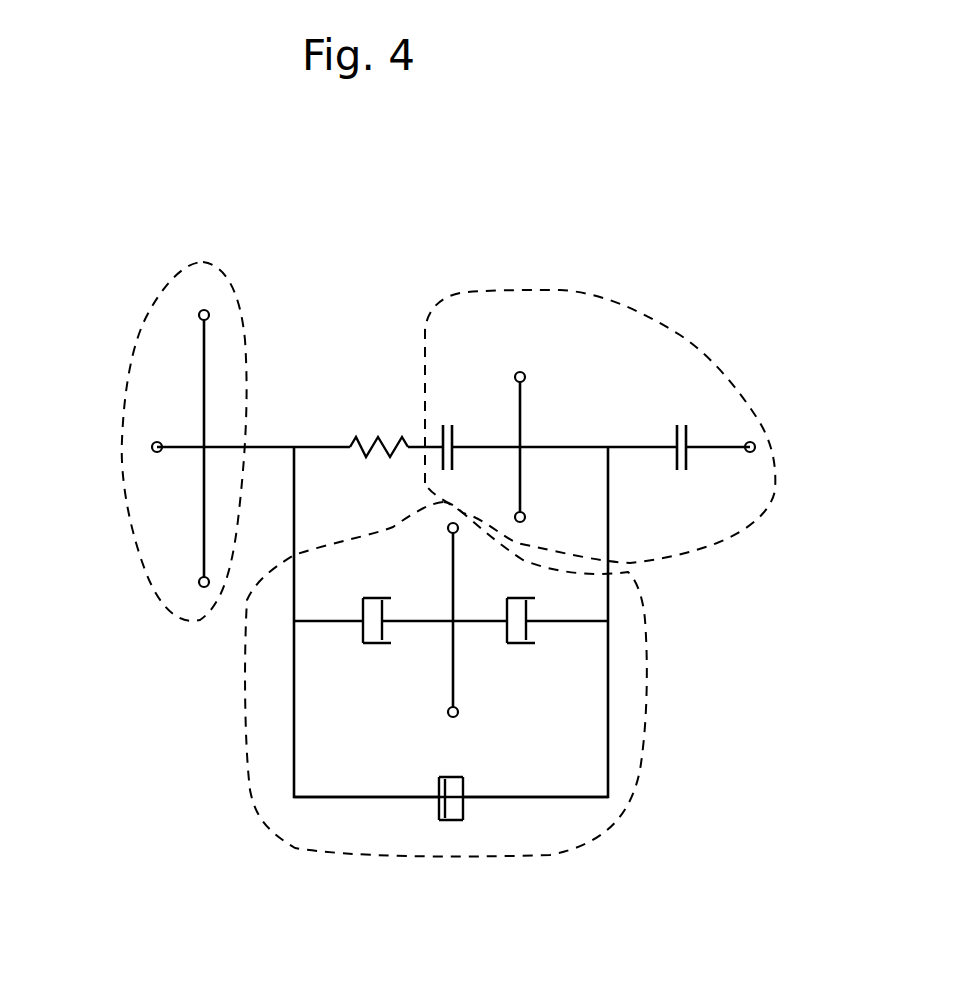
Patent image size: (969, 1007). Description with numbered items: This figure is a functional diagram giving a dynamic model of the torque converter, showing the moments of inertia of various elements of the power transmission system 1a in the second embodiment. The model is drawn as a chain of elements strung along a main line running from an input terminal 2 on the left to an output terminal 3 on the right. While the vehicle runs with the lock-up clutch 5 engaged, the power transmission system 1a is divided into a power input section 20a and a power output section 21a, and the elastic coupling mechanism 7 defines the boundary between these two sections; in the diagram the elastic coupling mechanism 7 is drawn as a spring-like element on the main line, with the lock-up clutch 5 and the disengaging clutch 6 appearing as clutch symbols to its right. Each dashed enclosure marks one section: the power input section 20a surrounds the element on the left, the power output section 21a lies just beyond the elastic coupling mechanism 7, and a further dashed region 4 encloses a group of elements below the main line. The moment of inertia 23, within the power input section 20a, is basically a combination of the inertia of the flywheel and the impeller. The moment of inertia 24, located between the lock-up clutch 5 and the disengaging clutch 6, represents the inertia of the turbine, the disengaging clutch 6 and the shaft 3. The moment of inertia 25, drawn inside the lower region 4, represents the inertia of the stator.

The power transmission system 1a is at (598, 318).
The input terminal 2 is at (152, 446).
The shaft 3 is at (755, 445).
The crystal filter block 4 is at (645, 683).
The lock-up clutch 5 is at (448, 405).
The disengaging clutch 6 is at (686, 384).
The elastic coupling mechanism 7 is at (366, 412).
The power input section 20a is at (240, 308).
The power output section 21a is at (490, 292).
The moment of inertia 23 is at (204, 545).
The moment of inertia 24 is at (521, 483).
The moment of inertia 25 is at (453, 672).